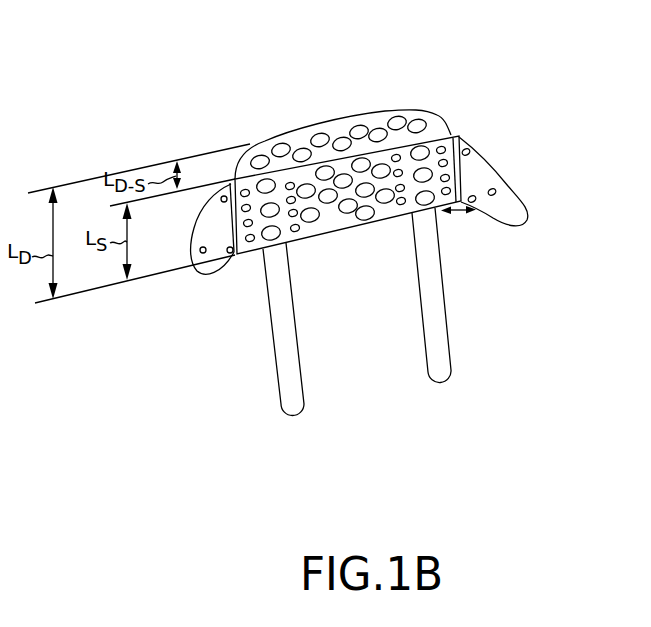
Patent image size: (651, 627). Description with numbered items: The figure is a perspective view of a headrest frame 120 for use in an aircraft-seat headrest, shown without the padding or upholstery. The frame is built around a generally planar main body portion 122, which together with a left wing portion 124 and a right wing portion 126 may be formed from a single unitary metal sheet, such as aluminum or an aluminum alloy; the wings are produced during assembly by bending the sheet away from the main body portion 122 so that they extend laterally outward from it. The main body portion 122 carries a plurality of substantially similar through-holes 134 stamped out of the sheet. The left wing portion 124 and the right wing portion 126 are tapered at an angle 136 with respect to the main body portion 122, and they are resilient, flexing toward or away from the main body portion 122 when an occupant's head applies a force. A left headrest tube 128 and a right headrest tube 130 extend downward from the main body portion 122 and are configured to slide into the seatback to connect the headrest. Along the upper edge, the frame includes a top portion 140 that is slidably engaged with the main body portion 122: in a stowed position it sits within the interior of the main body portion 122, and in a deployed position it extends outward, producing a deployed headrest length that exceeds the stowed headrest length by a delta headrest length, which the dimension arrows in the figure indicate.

The headrest frame 120 is at (398, 217).
The main body portion 122 is at (345, 211).
The left wing portion 124 is at (535, 163).
The right wing portion 126 is at (225, 244).
The left headrest tube 128 is at (472, 295).
The right headrest tube 130 is at (244, 329).
The through-holes 134 is at (337, 242).
The angle 136 is at (463, 238).
The top portion 140 is at (343, 126).